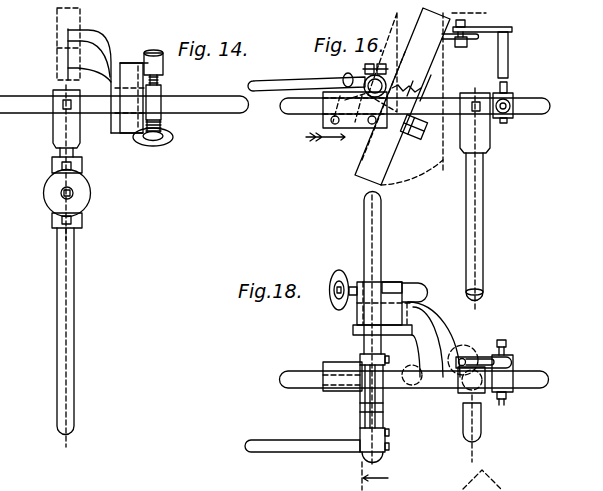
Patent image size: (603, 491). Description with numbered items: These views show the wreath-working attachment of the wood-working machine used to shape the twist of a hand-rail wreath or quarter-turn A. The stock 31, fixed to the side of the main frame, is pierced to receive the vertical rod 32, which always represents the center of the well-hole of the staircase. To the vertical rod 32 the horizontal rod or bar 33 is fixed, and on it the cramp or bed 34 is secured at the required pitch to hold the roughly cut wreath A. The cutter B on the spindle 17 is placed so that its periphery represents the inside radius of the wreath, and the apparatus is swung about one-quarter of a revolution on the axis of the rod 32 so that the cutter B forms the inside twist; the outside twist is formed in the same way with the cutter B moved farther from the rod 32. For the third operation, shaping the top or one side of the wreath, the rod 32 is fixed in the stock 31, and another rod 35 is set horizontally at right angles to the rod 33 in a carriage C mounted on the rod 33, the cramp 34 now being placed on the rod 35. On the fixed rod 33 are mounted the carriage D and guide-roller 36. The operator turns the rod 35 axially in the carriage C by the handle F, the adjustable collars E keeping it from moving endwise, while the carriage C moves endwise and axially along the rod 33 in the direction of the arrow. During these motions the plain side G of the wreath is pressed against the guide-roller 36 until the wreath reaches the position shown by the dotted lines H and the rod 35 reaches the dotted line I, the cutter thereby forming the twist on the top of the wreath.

In FIG. 14, the spindle 17 is at (68, 44).
In FIG. 16, the spindle 17 is at (393, 62).
In FIG. 18, the spindle 17 is at (385, 476).
In FIG. 14, the stock 31 is at (89, 190).
In FIG. 14, the vertical rod 32 is at (74, 337).
In FIG. 16, the vertical rod 32 is at (484, 255).
In FIG. 18, the vertical rod 32 is at (472, 428).
In FIG. 14, the horizontal rod 33 is at (124, 104).
In FIG. 16, the horizontal rod 33 is at (415, 106).
In FIG. 18, the horizontal rod 33 is at (399, 380).
In FIG. 14, the cramp 34 is at (168, 88).
In FIG. 16, the cramp 34 is at (353, 155).
In FIG. 18, the cramp 34 is at (357, 279).
In FIG. 18, the rod 35 is at (382, 329).
In FIG. 16, the guide-roller 36 is at (465, 38).
In FIG. 18, the guide-roller 36 is at (480, 363).
In FIG. 14, the wreath or quarter-turn A is at (89, 81).
In FIG. 16, the wreath or quarter-turn A is at (402, 96).
In FIG. 18, the wreath or quarter-turn A is at (453, 322).
In FIG. 14, the cutter B is at (58, 42).
In FIG. 18, the cutter B is at (420, 381).
In FIG. 16, the carriage C is at (317, 130).
In FIG. 18, the carriage C is at (342, 370).
In FIG. 16, the carriage D is at (507, 77).
In FIG. 18, the adjustable collars E is at (385, 360).
In FIG. 16, the handle F is at (306, 76).
In FIG. 18, the handle F is at (302, 437).
In FIG. 16, the plain side of the wreath G is at (482, 19).
In FIG. 16, the dotted-line final position of the wreath H is at (412, 106).
In FIG. 18, the dotted-line final position of the rod I is at (482, 477).